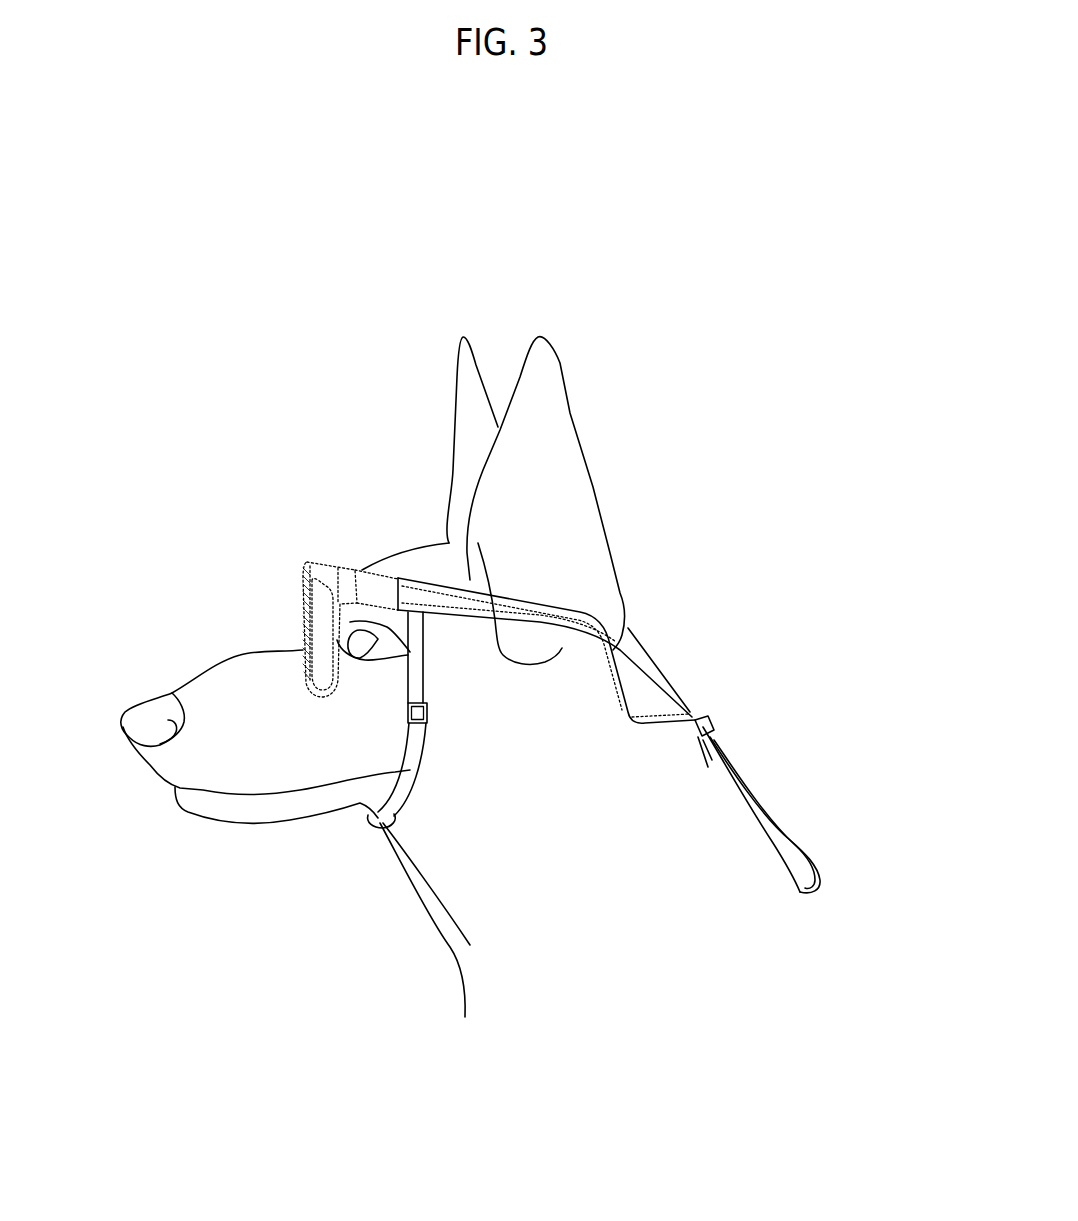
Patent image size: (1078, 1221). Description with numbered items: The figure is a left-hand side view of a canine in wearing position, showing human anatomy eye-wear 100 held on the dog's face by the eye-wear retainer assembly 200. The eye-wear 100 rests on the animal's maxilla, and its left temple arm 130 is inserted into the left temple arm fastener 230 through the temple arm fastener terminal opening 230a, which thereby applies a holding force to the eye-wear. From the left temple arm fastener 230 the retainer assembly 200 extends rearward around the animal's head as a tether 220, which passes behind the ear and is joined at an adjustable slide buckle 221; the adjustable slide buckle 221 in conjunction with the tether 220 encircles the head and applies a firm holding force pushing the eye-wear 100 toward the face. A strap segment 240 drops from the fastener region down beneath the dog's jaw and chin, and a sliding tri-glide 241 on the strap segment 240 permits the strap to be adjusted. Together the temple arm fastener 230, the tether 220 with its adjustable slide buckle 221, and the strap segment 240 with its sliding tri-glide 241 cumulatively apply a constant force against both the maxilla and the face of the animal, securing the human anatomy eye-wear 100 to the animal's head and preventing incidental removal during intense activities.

The human anatomy eye-wear 100 is at (303, 557).
The human anatomy eye-wear left temple arm 130 is at (378, 590).
The eye-wear retainer assembly 200 is at (528, 588).
The tether 220 is at (690, 708).
The adjustable slide buckle 221 is at (705, 728).
The left temple arm fastener 230 is at (453, 583).
The temple arm fastener terminal opening 230a is at (401, 588).
The strap segment 240 is at (416, 669).
The sliding tri-glide 241 is at (426, 722).